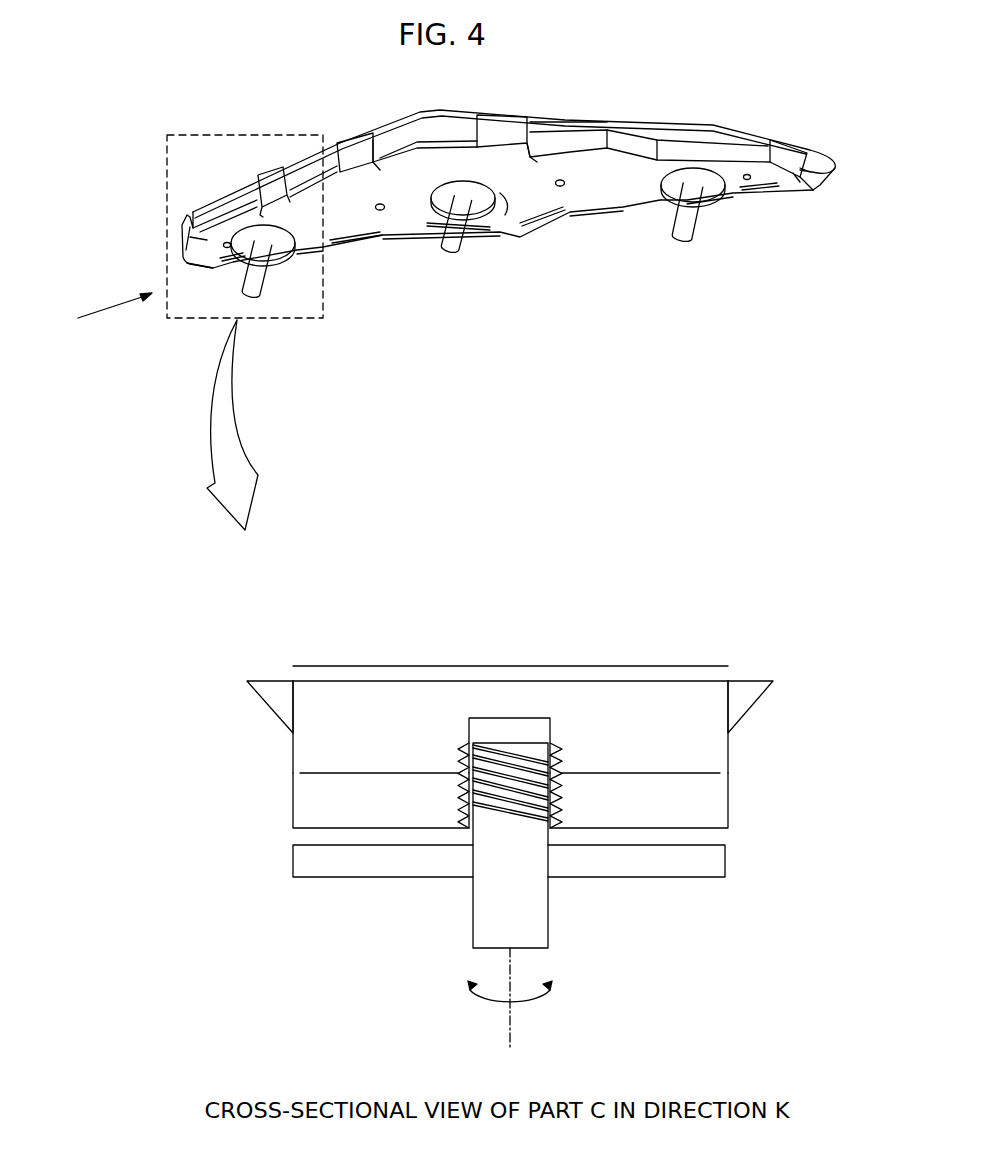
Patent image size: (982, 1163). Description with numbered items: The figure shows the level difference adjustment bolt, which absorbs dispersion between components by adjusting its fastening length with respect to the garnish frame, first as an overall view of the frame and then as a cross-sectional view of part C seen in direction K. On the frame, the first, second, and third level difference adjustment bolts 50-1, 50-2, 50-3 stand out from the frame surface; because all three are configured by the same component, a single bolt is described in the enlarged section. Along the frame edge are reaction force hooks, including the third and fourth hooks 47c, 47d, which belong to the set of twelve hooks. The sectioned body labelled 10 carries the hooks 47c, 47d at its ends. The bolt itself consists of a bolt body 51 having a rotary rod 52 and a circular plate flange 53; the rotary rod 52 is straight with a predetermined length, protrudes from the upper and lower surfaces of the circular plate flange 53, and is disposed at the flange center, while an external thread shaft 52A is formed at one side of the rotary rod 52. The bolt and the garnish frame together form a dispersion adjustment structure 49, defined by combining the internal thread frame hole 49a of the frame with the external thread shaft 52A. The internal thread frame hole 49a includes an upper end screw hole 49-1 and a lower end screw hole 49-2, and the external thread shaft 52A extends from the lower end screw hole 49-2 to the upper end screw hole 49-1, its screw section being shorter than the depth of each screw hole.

The panel member 10 is at (382, 666).
The third hook 47c is at (186, 232).
The fourth hook 47d is at (273, 694).
The dispersion adjustment structure 49 is at (408, 753).
The upper end screw hole 49-1 is at (328, 800).
The lower end screw hole 49-2 is at (345, 760).
The internal thread frame hole 49a is at (561, 748).
The first level difference adjustment bolt 50-1 is at (460, 250).
The second level difference adjustment bolt 50-2 is at (262, 277).
The third level difference adjustment bolt 50-3 is at (688, 218).
The bolt body 51 is at (443, 881).
The rotary rod 52 is at (393, 872).
The external thread shaft 52A is at (512, 788).
The circular plate flange 53 is at (612, 868).
The viewing direction K is at (105, 313).
The part C region C is at (183, 320).